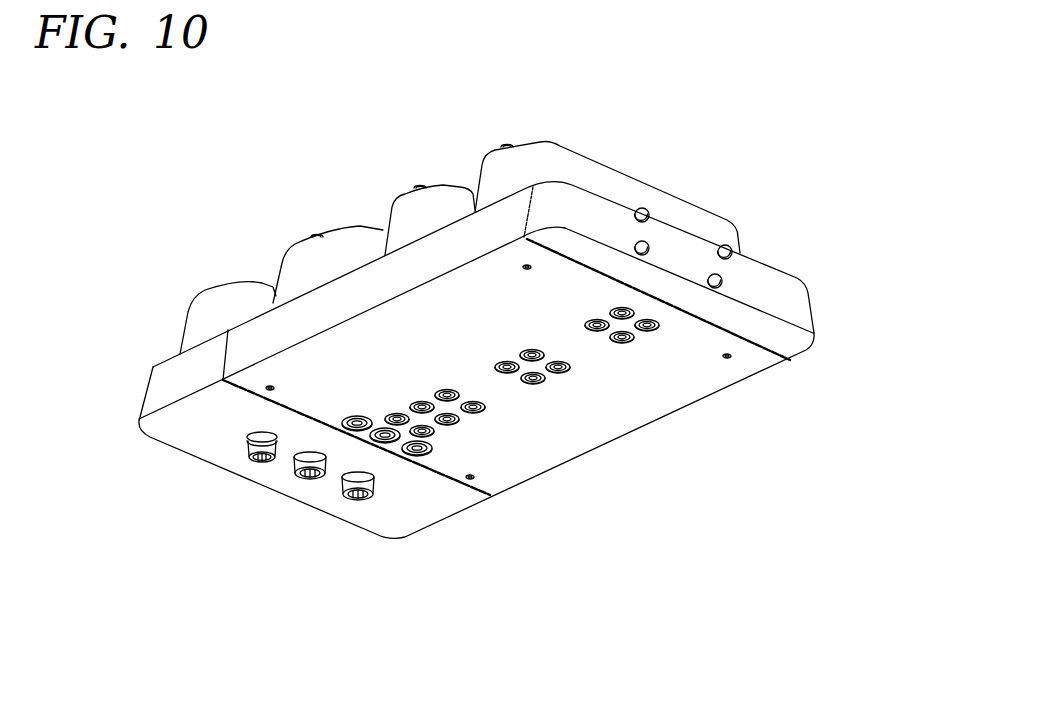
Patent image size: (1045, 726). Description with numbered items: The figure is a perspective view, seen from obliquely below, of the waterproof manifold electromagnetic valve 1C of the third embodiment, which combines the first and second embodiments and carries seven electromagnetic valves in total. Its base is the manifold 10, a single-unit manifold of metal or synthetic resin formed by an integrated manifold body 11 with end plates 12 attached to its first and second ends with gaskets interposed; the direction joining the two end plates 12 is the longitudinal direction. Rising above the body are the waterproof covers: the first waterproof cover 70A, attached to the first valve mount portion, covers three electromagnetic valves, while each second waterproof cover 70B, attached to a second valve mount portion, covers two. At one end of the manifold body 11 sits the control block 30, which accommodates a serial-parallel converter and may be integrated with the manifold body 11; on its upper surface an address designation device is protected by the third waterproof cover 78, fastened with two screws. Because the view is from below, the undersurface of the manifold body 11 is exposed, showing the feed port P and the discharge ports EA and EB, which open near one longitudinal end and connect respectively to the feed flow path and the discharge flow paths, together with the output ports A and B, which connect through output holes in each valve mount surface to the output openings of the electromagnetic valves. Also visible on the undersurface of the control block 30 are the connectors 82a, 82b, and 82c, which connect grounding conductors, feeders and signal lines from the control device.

The manifold electromagnetic valve 1C is at (483, 204).
The manifold 10 is at (742, 406).
The manifold body 11 is at (633, 400).
The end plate 12 is at (797, 303).
The control block 30 is at (195, 433).
The third waterproof cover 78 is at (216, 256).
The first waterproof cover 70A is at (330, 199).
The second waterproof cover 70B is at (436, 156).
The connector 82a is at (358, 500).
The connector 82b is at (310, 479).
The connector 82c is at (262, 462).
The discharge port EA is at (417, 450).
The discharge port EB is at (352, 417).
The feed port P is at (385, 437).
The output port A is at (533, 380).
The output port B is at (507, 369).